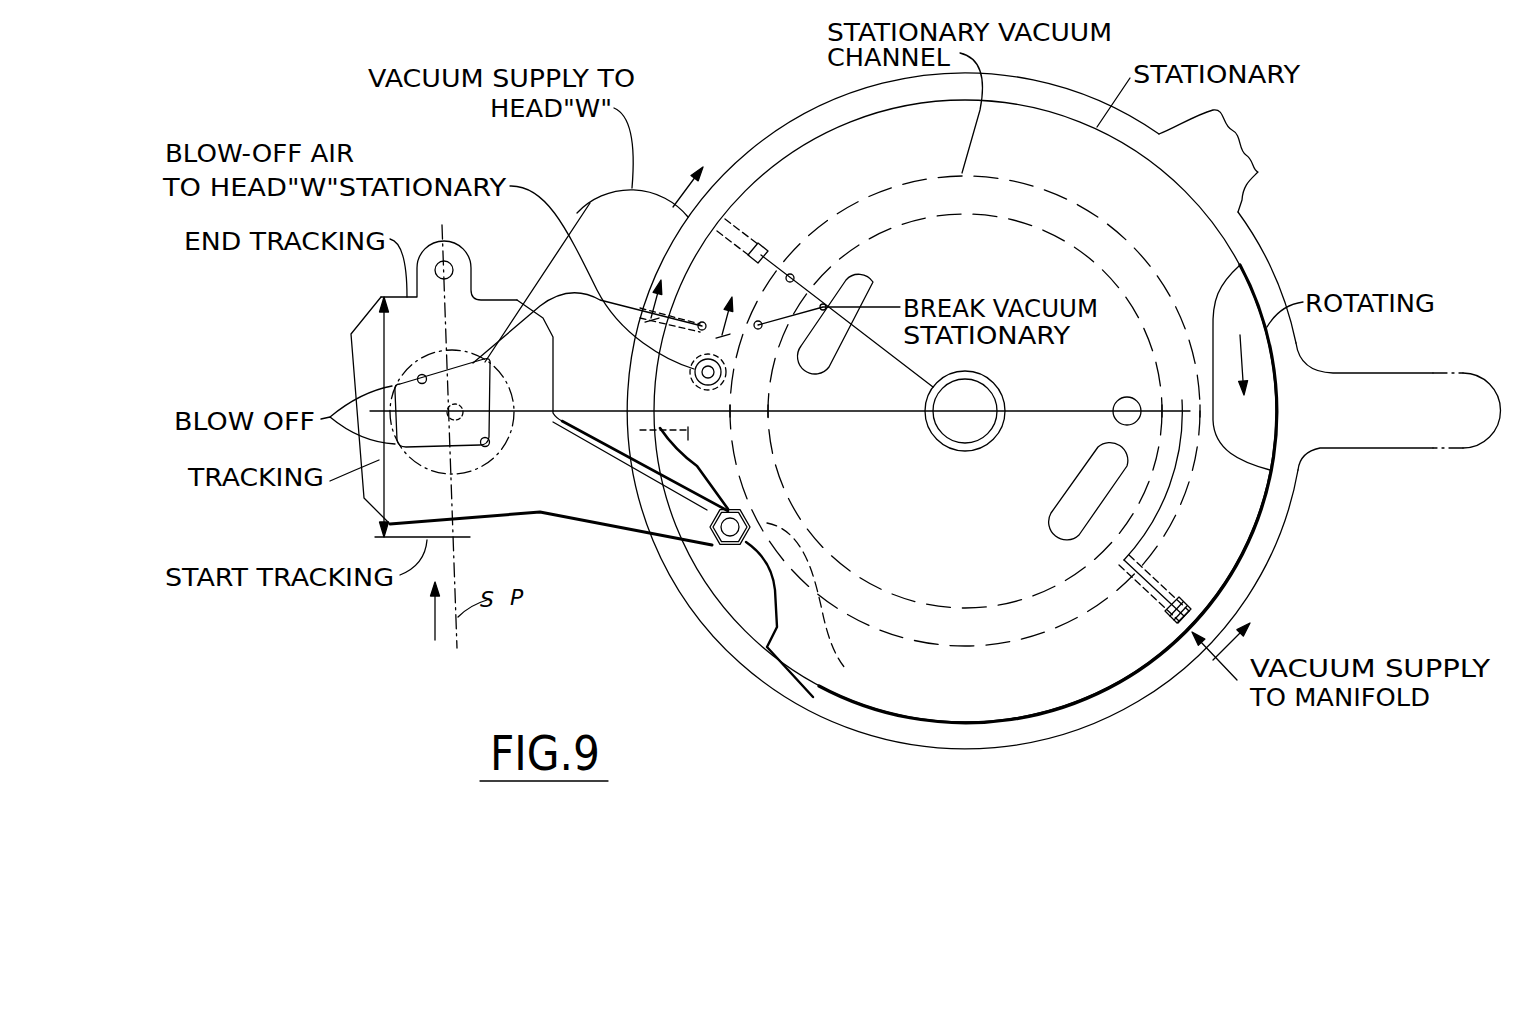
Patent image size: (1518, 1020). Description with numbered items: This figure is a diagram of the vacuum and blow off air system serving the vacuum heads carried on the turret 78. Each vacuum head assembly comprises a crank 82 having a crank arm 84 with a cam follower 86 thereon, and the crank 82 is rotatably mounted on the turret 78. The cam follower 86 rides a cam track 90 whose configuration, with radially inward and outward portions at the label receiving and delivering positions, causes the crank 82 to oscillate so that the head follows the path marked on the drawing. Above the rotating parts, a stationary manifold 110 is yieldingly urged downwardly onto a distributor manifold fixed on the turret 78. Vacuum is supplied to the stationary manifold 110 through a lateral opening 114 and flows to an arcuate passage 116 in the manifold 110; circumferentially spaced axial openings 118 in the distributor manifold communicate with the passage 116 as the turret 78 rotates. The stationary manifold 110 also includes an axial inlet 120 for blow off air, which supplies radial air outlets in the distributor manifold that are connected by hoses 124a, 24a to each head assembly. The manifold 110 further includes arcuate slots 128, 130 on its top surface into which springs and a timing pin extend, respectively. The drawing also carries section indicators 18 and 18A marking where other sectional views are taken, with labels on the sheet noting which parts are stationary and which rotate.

The section line 18- 18 is at (981, 393).
The section line 18A- 18A is at (702, 289).
The hose 24a is at (452, 412).
The turret 78 is at (1260, 169).
The crank 82 is at (338, 351).
The crank arm 84 is at (588, 512).
The cam follower 86 is at (752, 527).
The cam track 90 is at (763, 582).
The stationary manifold 110 is at (947, 693).
The lateral opening 114 is at (1187, 636).
The arcuate passage 116 is at (1084, 226).
The axial openings 118 is at (793, 273).
The axial inlet 120 is at (706, 329).
The hose 124a is at (583, 297).
The arcuate slot 128 is at (870, 276).
The arcuate slot 130 is at (1078, 488).